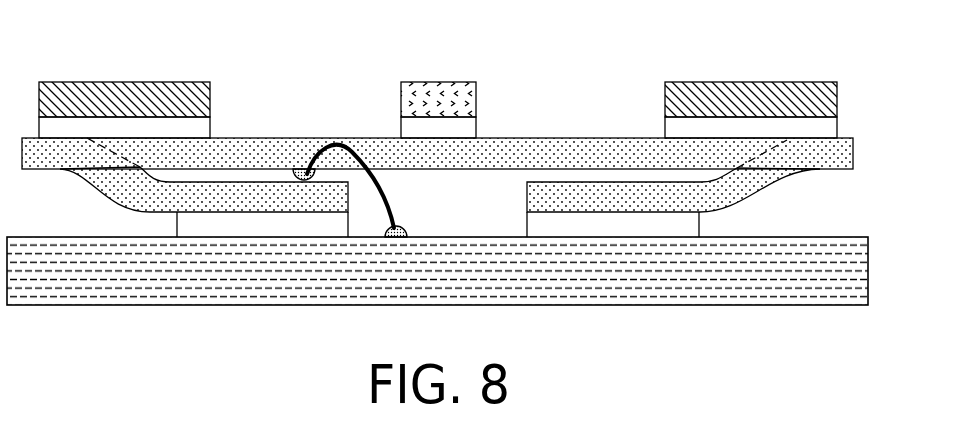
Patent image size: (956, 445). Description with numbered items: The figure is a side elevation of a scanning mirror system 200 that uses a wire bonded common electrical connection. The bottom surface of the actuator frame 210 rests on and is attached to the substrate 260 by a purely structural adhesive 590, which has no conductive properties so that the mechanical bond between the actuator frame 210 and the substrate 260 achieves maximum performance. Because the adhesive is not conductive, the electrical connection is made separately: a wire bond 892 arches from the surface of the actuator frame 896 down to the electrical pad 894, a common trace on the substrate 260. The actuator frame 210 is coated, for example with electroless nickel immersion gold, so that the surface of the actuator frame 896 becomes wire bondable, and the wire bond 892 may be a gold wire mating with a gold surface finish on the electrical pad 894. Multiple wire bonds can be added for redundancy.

The scanning mirror system 200 is at (118, 44).
The actuator frame 210 is at (238, 187).
The substrate 260 is at (327, 306).
The structural adhesive 590 is at (181, 225).
The wire bond 892 is at (390, 186).
The electrical pad 894 is at (402, 229).
The surface of the actuator frame 896 is at (297, 169).